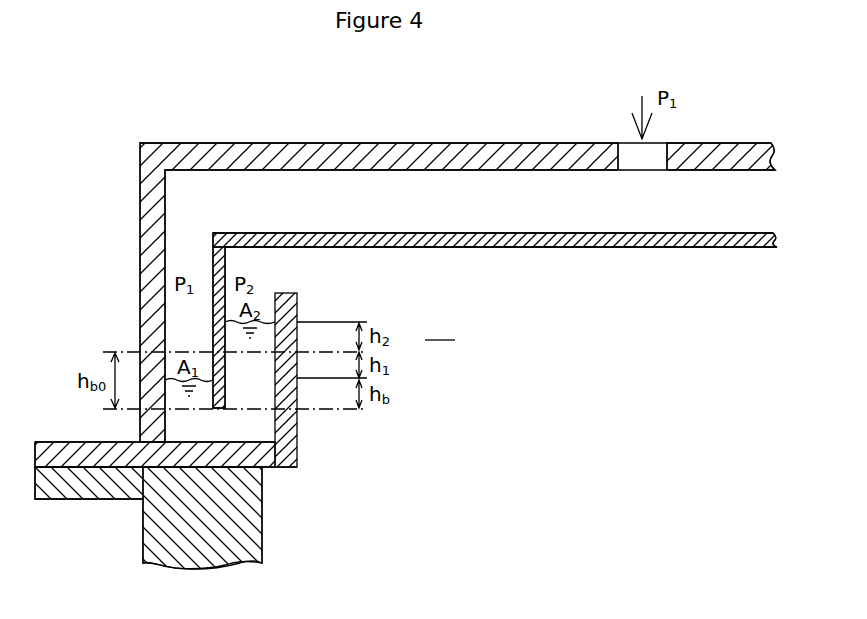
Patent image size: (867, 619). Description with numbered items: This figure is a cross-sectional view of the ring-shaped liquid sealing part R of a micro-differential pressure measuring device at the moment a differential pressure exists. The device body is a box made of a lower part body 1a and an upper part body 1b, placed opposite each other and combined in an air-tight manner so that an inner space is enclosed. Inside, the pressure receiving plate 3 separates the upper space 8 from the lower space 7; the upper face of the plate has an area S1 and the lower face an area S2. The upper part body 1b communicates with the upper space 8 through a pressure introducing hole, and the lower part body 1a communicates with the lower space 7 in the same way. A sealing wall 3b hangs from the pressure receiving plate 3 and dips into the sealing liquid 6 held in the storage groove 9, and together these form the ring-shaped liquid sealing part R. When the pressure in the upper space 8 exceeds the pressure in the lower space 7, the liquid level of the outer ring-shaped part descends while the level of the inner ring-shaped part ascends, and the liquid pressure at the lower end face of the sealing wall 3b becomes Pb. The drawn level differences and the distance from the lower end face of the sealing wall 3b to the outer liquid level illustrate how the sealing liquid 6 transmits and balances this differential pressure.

The lower part body 1a is at (200, 530).
The upper part body 1b is at (328, 167).
The pressure receiving plate 3 is at (517, 231).
The sealing wall 3b is at (215, 264).
The sealing liquid 6 is at (261, 418).
The lower space 7 is at (453, 351).
The upper space 8 is at (467, 196).
The storage groove 9 is at (175, 427).
The area of the upper face of the pressure receiving plate S1 is at (352, 233).
The area of the lower face of the pressure receiving plate S2 is at (352, 247).
The liquid pressure at the lower end face of the sealing wall Pb is at (243, 410).
The ring-shaped liquid sealing part R is at (249, 433).